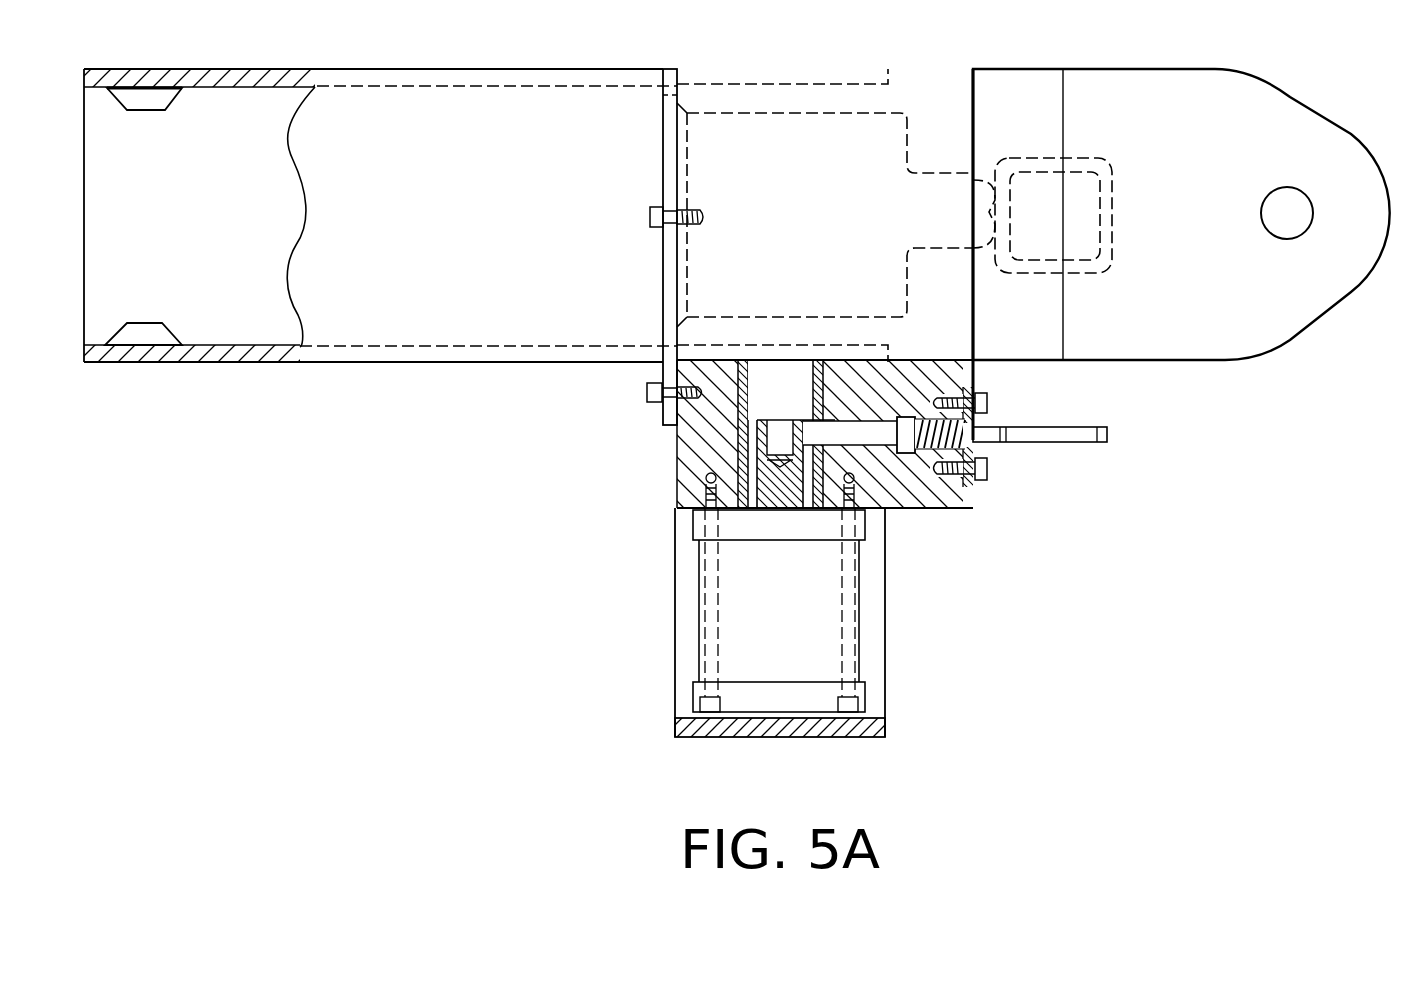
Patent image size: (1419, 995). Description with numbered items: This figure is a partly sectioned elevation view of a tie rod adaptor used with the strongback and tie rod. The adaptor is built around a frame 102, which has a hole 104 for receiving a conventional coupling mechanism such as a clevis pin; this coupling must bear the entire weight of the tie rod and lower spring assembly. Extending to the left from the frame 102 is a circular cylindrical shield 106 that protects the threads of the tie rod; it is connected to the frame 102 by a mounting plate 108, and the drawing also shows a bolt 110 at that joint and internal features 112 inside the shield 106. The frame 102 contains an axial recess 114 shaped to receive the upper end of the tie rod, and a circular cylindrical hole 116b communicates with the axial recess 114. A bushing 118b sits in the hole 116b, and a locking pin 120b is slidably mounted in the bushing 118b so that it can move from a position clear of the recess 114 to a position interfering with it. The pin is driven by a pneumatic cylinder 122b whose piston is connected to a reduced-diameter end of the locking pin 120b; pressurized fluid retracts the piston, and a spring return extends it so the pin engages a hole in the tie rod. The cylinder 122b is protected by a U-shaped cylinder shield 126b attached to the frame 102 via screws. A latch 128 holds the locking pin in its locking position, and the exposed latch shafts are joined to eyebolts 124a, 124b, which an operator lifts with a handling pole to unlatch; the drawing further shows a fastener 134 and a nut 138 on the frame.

The frame 102 is at (1175, 372).
The hole 104 is at (1290, 192).
The circular cylindrical shield 106 is at (361, 363).
The mounting plate 108 is at (660, 418).
The bolt 110 is at (647, 392).
The lug 112 is at (150, 111).
The axial recess 114 is at (748, 113).
The circular cylindrical hole 116b is at (803, 493).
The bushing 118b is at (740, 450).
The locking pin 120b is at (773, 393).
The pneumatic cylinder 122b is at (862, 655).
The eyebolt 124a is at (1112, 188).
The eyebolt 124b is at (1107, 443).
The U-shaped cylinder shield 126b is at (850, 730).
The latch 128 is at (976, 380).
The fastener 134 is at (935, 470).
The nut 138 is at (987, 405).